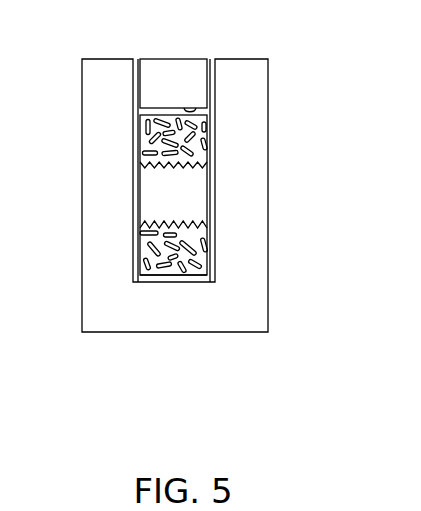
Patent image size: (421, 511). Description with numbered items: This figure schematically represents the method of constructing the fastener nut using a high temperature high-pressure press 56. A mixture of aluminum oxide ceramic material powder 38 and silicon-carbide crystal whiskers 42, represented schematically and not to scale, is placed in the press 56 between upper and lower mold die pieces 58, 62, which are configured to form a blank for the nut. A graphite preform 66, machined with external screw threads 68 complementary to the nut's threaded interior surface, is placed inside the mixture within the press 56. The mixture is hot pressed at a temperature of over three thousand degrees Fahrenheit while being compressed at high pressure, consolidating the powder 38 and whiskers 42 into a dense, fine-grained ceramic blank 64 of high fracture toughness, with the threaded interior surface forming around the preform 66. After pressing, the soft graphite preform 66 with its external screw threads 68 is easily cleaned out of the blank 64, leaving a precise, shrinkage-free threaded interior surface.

The high temperature high-pressure press 56 is at (268, 218).
The aluminum oxide ceramic material powder 38 is at (151, 122).
The mold die piece 58 is at (196, 108).
The blank 64 is at (209, 141).
The external screw threads 68 is at (146, 161).
The graphite preform 66 is at (155, 190).
The silicon-carbide crystal whiskers 42 is at (212, 123).
The mold die piece 62 is at (171, 277).